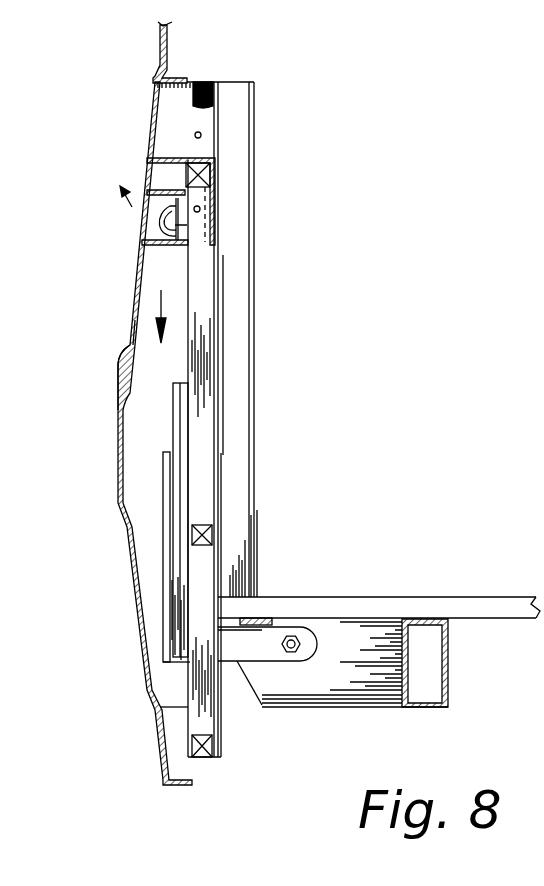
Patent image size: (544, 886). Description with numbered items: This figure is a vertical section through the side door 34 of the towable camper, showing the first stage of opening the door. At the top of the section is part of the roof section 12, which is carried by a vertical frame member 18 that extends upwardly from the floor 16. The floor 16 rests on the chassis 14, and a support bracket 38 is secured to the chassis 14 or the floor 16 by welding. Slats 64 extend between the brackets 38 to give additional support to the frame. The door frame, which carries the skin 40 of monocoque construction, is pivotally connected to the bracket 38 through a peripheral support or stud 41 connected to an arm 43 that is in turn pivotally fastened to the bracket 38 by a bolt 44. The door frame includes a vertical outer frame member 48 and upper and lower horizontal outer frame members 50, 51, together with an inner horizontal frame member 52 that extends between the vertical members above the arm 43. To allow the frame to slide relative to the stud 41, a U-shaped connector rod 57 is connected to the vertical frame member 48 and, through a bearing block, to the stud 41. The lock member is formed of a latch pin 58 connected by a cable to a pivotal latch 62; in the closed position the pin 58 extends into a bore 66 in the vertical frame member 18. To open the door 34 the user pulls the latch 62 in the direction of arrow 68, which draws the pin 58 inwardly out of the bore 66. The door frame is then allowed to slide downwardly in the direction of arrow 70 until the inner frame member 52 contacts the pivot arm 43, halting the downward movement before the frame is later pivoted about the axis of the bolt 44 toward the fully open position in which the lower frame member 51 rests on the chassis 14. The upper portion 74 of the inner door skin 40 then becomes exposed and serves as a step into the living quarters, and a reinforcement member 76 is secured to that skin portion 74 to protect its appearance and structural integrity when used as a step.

The roof section 12 is at (157, 57).
The chassis 14 is at (448, 662).
The floor 16 is at (424, 605).
The vertical frame member 18 is at (213, 82).
The door 34 is at (127, 290).
The support bracket 38 is at (335, 706).
The skin 40 is at (118, 410).
The peripheral support or stud 41 is at (170, 500).
The arm 43 is at (264, 662).
The bolt 44 is at (300, 630).
The vertical outer frame member 48 is at (213, 322).
The horizontal outer frame member 50 is at (208, 173).
The horizontal outer frame member 51 is at (205, 758).
The inner horizontal frame member 52 is at (212, 537).
The U-shaped connector rod 57 is at (176, 423).
The latch pin 58 is at (200, 209).
The pivotal latch 62 is at (146, 230).
The slat 64 is at (262, 618).
The bore 66 is at (202, 135).
The arrow 68 is at (148, 212).
The arrow 70 is at (131, 328).
The upper portion of inner door skin 74 is at (220, 475).
The reinforcement member 76 is at (222, 370).